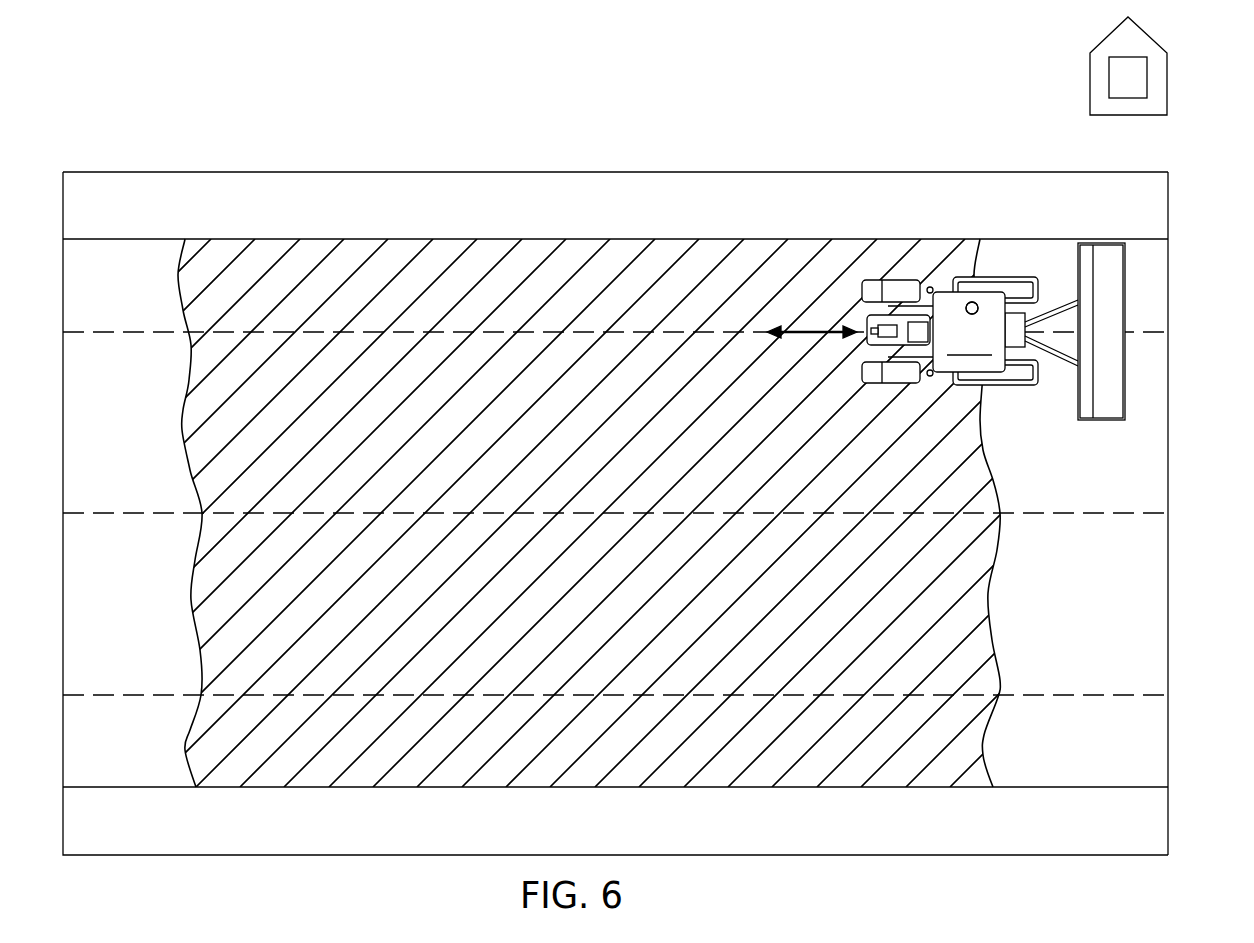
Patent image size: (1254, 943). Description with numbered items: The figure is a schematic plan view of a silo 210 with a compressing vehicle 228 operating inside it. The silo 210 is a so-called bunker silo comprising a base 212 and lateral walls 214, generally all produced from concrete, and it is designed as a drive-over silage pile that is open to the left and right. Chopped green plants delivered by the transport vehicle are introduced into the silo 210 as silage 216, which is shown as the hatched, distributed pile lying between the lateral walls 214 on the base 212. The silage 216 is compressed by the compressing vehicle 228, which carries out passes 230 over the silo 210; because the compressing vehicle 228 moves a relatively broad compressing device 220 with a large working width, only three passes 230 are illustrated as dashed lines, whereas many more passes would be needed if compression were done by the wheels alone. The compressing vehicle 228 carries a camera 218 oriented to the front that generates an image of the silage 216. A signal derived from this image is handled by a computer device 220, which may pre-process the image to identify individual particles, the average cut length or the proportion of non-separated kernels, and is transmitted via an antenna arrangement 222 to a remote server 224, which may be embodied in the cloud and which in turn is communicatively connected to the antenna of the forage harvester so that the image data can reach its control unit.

The silo 210 is at (312, 881).
The base 212 is at (1090, 732).
The lateral walls 214 is at (819, 205).
The silage 216 is at (953, 611).
The camera 218 is at (888, 328).
The compressing device / computer device 220 is at (918, 328).
The antenna arrangement 222 is at (973, 305).
The remote server 224 is at (1137, 77).
The compressing vehicle 228 is at (922, 331).
The passes 230 is at (158, 334).